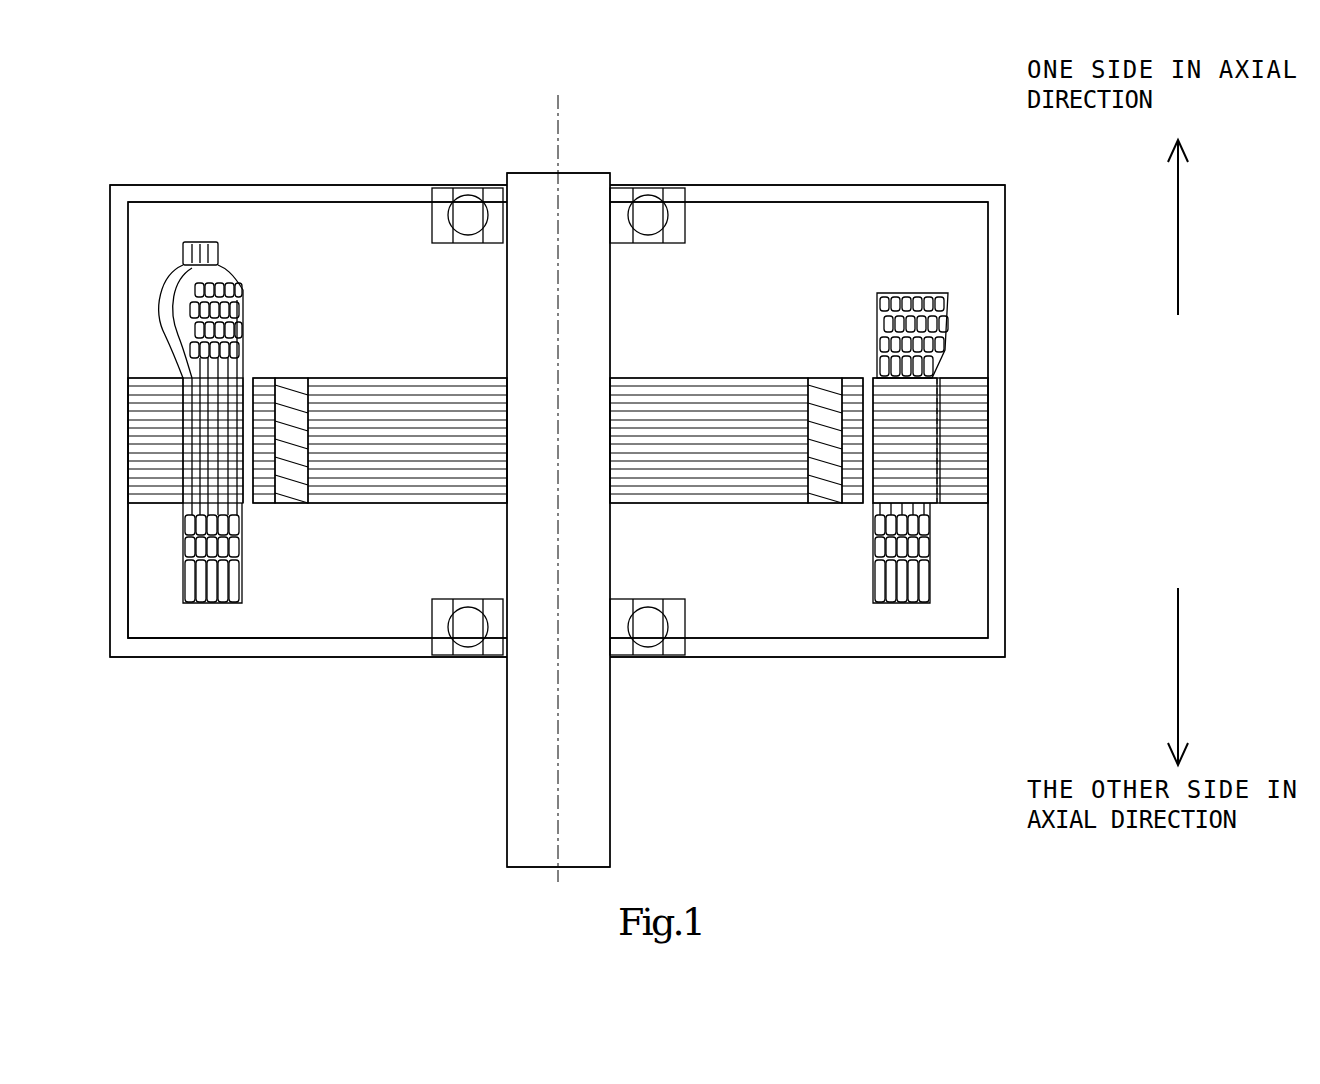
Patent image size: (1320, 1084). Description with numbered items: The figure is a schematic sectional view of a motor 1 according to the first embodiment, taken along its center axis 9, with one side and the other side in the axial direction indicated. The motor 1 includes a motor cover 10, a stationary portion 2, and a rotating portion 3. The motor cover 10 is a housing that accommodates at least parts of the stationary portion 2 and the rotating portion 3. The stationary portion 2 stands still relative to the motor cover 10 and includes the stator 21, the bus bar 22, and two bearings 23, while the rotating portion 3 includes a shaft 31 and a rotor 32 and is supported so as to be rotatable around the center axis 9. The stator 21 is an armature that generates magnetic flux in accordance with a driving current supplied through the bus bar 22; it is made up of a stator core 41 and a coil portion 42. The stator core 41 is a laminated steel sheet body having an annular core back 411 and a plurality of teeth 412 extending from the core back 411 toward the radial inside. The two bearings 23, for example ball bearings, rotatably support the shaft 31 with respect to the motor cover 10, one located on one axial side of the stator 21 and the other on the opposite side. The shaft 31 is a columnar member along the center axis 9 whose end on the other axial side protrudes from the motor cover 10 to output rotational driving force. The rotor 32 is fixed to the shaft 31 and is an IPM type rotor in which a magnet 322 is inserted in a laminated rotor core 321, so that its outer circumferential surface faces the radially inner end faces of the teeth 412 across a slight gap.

The motor 1 is at (815, 165).
The motor cover 10 is at (733, 195).
The stationary portion 2 is at (893, 647).
The stator 21 is at (160, 600).
The bus bar 22 is at (210, 238).
The bearings 23 is at (440, 195).
The rotating portion 3 is at (358, 308).
The shaft 31 is at (530, 765).
The rotor 32 is at (322, 706).
The rotor core 321 is at (363, 465).
The magnet 322 is at (292, 470).
The stator core 41 is at (1093, 410).
The core back 411 is at (965, 393).
The teeth 412 is at (940, 487).
The coil portion 42 is at (903, 275).
The center axis 9 is at (558, 118).